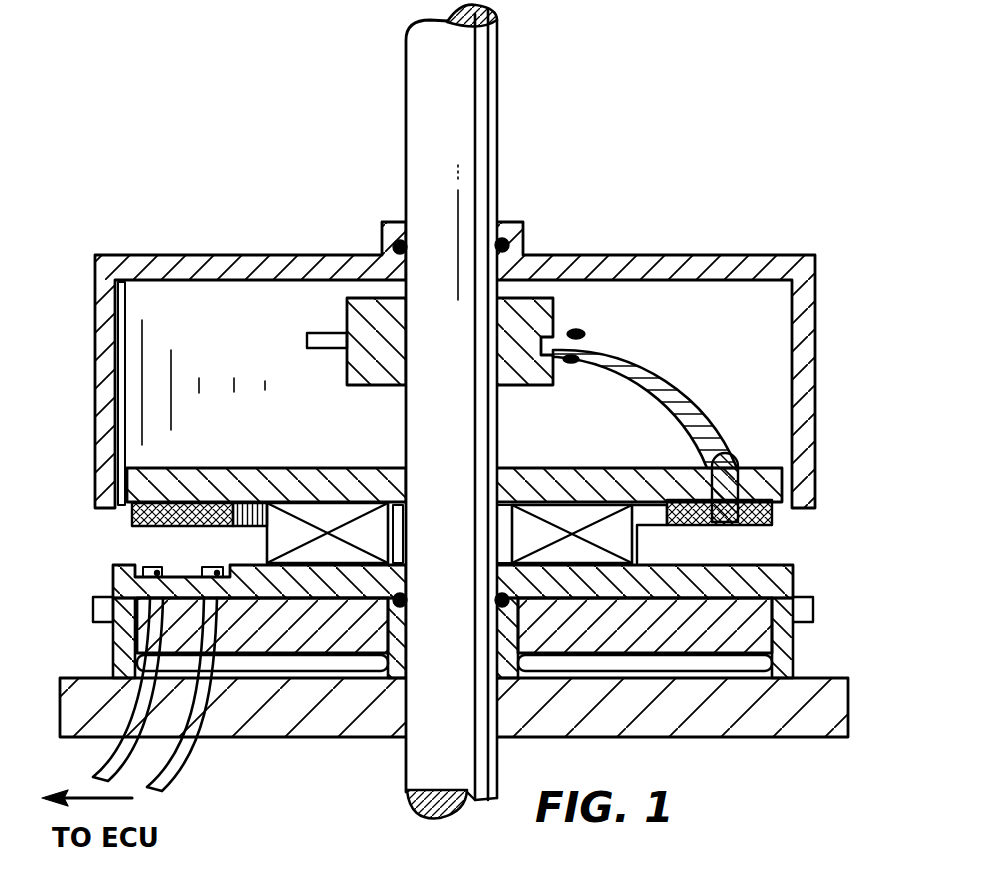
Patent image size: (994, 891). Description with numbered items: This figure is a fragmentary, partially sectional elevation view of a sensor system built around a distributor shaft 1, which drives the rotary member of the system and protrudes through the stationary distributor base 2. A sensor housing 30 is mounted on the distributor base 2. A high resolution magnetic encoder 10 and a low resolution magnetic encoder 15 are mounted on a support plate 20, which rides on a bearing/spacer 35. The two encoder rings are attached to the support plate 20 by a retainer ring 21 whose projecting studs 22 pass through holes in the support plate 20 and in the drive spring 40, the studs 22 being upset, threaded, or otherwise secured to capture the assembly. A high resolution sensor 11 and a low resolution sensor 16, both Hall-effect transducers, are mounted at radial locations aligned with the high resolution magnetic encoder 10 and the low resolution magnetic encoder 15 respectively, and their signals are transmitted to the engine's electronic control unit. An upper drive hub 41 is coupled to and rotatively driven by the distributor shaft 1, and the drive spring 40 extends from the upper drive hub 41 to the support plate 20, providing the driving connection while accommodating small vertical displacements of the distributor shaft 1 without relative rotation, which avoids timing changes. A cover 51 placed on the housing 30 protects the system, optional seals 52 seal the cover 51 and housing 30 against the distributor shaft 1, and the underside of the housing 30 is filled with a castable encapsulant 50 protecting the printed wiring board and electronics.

The distributor shaft 1 is at (404, 130).
The distributor base 2 is at (322, 738).
The high resolution magnetic encoder 10 is at (660, 527).
The high resolution sensor 11 is at (150, 572).
The low resolution magnetic encoder 15 is at (220, 527).
The low resolution sensor 16 is at (212, 570).
The support plate 20 is at (780, 488).
The retainer ring 21 is at (735, 528).
The projecting studs 22 is at (743, 468).
The sensor housing 30 is at (811, 583).
The bearing/spacer 35 is at (555, 510).
The drive spring 40 is at (685, 425).
The upper drive hub 41 is at (598, 340).
The castable encapsulant 50 is at (760, 625).
The cover 51 is at (665, 262).
The seals 52 is at (498, 238).